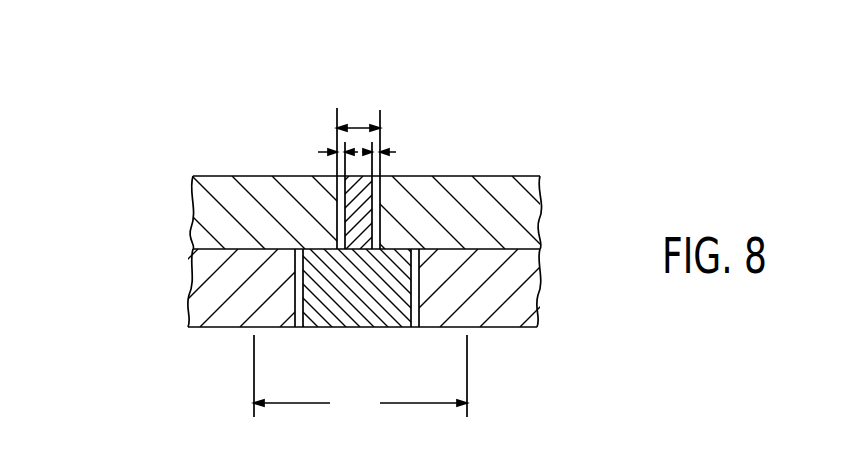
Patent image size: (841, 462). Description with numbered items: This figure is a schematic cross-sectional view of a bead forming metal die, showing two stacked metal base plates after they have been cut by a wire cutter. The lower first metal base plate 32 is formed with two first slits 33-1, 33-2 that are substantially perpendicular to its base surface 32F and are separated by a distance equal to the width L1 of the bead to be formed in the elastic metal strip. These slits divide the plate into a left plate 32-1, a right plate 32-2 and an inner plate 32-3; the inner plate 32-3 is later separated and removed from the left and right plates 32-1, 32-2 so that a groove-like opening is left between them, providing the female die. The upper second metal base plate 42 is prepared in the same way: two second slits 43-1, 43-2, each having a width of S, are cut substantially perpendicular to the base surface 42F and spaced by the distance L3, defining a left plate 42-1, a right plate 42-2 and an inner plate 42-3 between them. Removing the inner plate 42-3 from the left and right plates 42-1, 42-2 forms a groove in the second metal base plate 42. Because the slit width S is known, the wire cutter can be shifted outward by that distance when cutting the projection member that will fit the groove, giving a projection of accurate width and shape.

The second metal base plate 42 is at (533, 218).
The base surface 42F is at (463, 177).
The left plate 42-1 is at (222, 184).
The right plate 42-2 is at (500, 194).
The inner plate 42-3 is at (365, 202).
The second slit 43-1 is at (336, 207).
The second slit 43-2 is at (381, 215).
The first metal base plate 32 is at (540, 282).
The base surface 32F is at (491, 328).
The left plate 32-1 is at (197, 317).
The right plate 32-2 is at (520, 318).
The inner plate 32-3 is at (355, 283).
The first slit 33-1 is at (300, 327).
The first slit 33-2 is at (413, 327).
The width of the bead L1 is at (360, 379).
The distance between second slits L3 is at (359, 128).
The slit width S is at (336, 150).